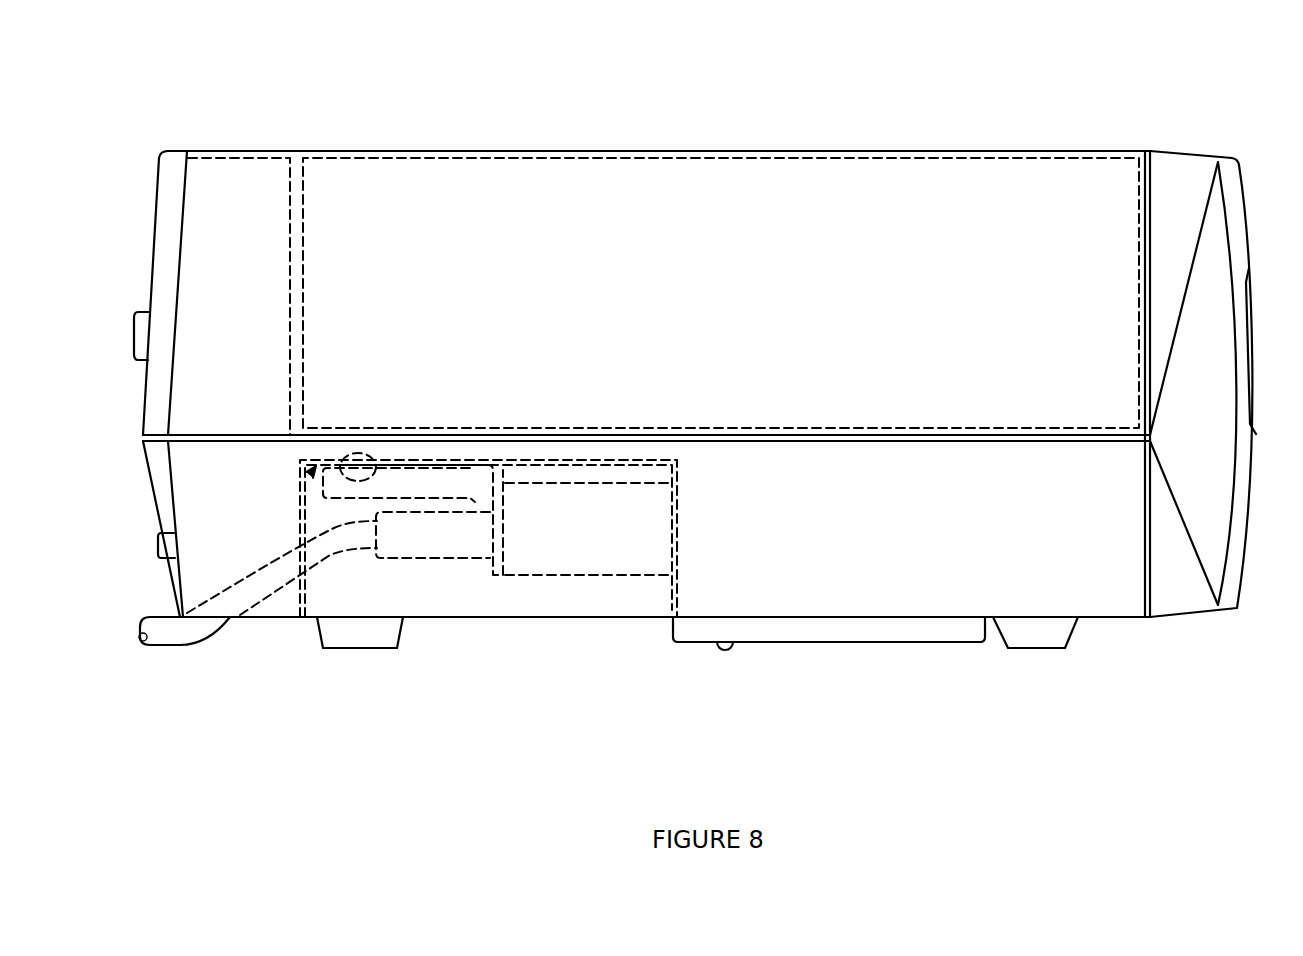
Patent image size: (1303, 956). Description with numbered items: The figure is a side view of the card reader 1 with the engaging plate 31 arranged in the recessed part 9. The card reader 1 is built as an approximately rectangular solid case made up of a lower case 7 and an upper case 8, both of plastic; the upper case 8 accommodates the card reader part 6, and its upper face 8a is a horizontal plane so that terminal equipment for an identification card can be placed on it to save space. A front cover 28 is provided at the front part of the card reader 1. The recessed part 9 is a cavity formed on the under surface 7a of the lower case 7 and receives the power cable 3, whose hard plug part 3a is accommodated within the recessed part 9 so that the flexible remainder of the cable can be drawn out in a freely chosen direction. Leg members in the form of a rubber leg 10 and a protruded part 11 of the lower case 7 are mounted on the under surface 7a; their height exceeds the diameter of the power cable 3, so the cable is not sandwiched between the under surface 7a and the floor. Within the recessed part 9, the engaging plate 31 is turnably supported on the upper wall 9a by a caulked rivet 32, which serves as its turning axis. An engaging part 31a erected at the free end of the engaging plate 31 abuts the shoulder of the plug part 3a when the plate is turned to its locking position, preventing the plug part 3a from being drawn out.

The card reader 1 is at (213, 133).
The power cable 3 is at (197, 620).
The plug part 3a is at (510, 565).
The card reader part 6 is at (864, 182).
The lower case 7 is at (1120, 600).
The under surface 7a is at (572, 618).
The upper case 8 is at (463, 180).
The upper face 8a is at (641, 151).
The recessed part 9 is at (660, 607).
The upper wall 9a is at (298, 487).
The rubber leg 10 is at (1046, 637).
The protruded part 11 is at (360, 630).
The front cover 28 is at (1173, 172).
The engaging plate 31 is at (413, 485).
The engaging part 31a is at (510, 470).
The rivet 32 is at (358, 452).